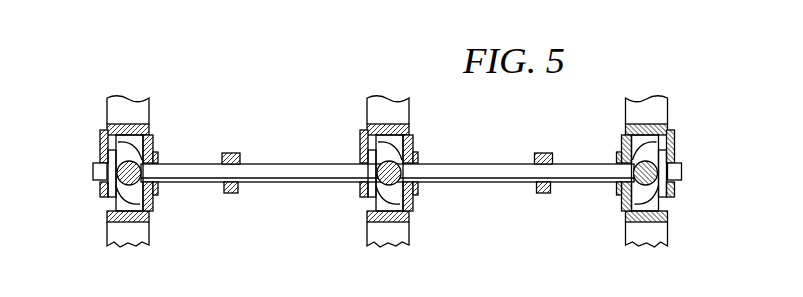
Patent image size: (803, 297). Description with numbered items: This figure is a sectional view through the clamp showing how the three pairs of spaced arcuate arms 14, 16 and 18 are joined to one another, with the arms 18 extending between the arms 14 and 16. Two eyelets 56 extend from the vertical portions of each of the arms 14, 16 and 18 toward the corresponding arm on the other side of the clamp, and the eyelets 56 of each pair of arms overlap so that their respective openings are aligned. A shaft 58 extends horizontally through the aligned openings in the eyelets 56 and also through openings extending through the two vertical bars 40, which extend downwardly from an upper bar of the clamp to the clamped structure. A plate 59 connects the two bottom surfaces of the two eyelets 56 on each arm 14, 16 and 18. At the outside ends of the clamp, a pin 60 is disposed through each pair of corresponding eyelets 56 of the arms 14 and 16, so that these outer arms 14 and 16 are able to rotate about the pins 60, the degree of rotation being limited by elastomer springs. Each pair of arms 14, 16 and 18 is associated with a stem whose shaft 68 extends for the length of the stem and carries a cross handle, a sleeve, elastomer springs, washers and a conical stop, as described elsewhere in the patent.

The arcuate arm 14 is at (668, 113).
The arcuate arm 16 is at (107, 112).
The arcuate arm 18 is at (367, 112).
The vertical bar 40 is at (229, 152).
The eyelet 56 is at (100, 148).
The shaft 58 is at (278, 185).
The plate 59 is at (130, 140).
The pin 60 is at (93, 172).
The shaft 68 is at (108, 205).